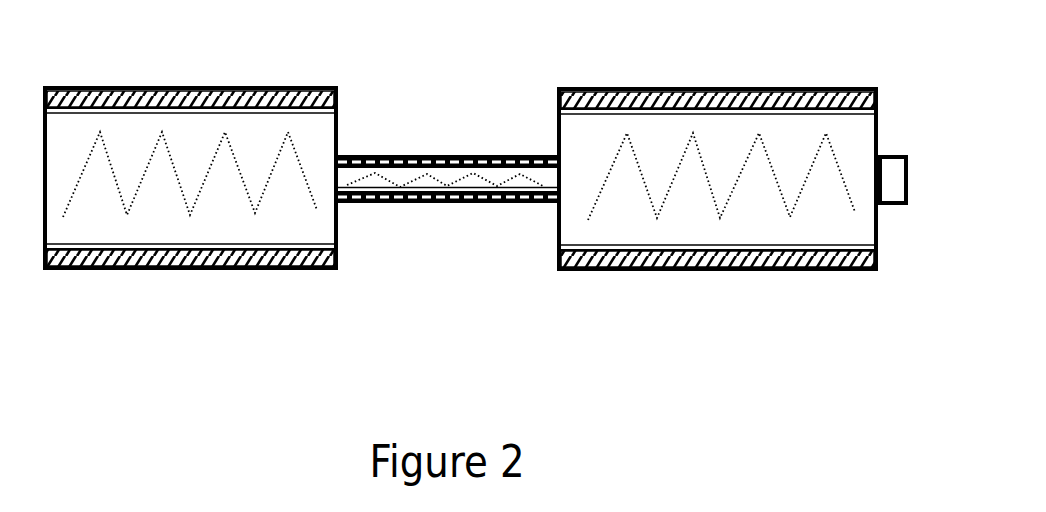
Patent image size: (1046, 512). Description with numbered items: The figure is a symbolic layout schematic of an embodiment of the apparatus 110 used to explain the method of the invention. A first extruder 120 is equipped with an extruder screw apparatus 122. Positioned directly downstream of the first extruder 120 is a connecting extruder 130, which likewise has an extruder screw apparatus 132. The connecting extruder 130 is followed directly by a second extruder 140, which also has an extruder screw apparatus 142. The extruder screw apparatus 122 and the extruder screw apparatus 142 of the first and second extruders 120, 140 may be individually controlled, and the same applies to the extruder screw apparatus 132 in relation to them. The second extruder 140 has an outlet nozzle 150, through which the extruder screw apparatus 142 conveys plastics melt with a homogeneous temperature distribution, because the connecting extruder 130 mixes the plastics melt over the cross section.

The apparatus 110 is at (494, 174).
The first extruder 120 is at (271, 86).
The extruder screw apparatus 122 is at (190, 180).
The connecting extruder 130 is at (483, 155).
The extruder screw apparatus 132 is at (401, 184).
The second extruder 140 is at (823, 88).
The extruder screw apparatus 142 is at (721, 181).
The outlet nozzle 150 is at (900, 154).